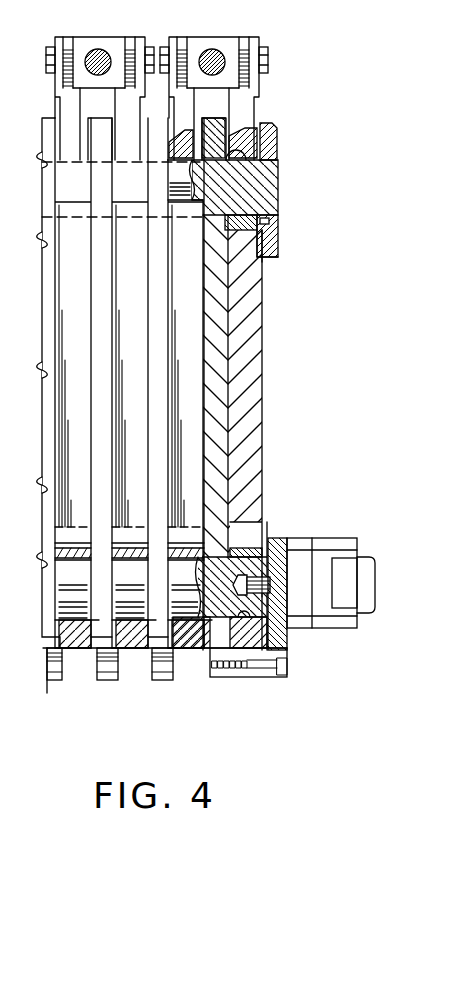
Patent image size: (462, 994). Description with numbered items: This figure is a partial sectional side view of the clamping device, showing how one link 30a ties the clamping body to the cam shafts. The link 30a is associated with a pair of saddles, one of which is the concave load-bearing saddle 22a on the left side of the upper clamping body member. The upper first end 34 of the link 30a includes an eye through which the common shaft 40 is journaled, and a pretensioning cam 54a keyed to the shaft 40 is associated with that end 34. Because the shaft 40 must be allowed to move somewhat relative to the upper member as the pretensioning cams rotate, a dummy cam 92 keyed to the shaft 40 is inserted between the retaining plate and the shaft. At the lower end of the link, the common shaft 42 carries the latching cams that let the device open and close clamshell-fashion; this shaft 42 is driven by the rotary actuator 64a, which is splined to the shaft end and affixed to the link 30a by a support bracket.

The first end of link 34 is at (213, 130).
The common shaft 40 is at (268, 188).
The dummy cam 92 is at (277, 224).
The cam 54a is at (278, 245).
The saddle 22a is at (263, 253).
The link 30a is at (217, 379).
The rotary actuator 64a is at (323, 557).
The common shaft 42 is at (134, 590).